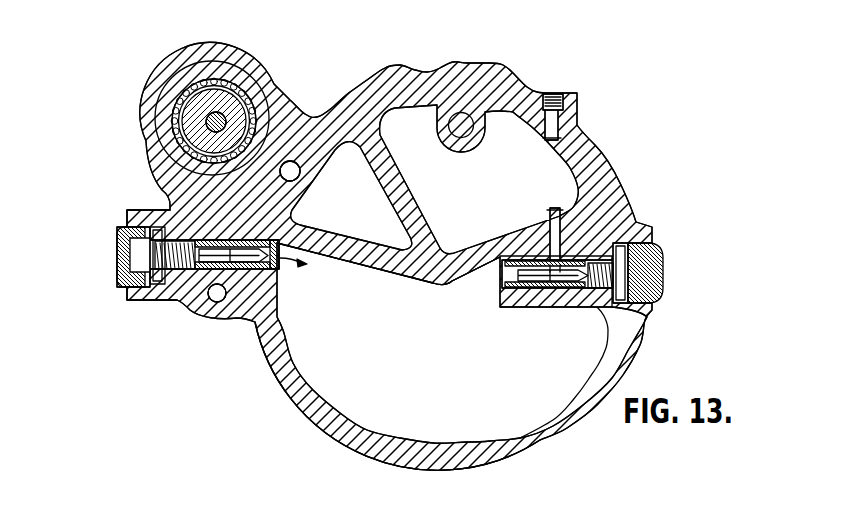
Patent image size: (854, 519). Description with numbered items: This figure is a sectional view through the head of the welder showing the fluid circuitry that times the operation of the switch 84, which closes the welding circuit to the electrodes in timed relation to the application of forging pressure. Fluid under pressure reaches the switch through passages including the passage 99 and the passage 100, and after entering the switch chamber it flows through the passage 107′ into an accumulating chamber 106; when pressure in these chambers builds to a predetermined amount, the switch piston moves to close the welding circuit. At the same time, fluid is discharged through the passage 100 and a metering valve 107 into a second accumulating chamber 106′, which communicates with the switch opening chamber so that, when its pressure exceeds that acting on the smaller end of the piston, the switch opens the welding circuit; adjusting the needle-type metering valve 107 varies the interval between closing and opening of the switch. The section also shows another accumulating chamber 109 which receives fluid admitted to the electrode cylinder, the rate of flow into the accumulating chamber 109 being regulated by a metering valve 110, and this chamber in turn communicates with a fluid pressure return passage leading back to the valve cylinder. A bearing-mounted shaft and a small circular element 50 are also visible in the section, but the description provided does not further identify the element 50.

The switch 84 is at (174, 122).
The accumulating chamber 109 is at (404, 126).
The passage 107′ is at (296, 173).
The pin 50 is at (461, 127).
The accumulating chamber 106 is at (352, 227).
The accumulating chamber 106′ is at (405, 418).
The metering valve 107 is at (177, 301).
The passage 100 is at (204, 291).
The passage 99 is at (218, 303).
The metering valve 110 is at (592, 268).